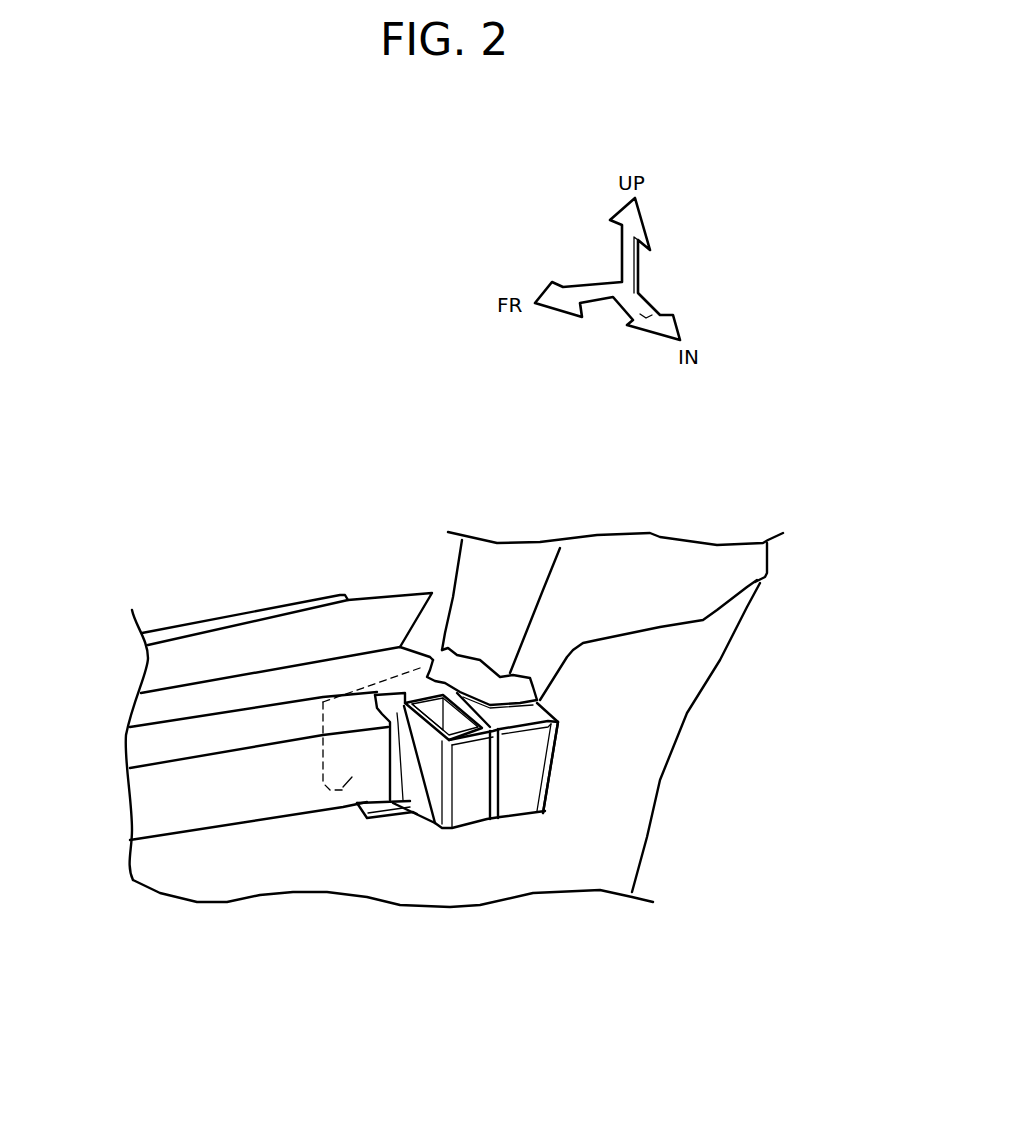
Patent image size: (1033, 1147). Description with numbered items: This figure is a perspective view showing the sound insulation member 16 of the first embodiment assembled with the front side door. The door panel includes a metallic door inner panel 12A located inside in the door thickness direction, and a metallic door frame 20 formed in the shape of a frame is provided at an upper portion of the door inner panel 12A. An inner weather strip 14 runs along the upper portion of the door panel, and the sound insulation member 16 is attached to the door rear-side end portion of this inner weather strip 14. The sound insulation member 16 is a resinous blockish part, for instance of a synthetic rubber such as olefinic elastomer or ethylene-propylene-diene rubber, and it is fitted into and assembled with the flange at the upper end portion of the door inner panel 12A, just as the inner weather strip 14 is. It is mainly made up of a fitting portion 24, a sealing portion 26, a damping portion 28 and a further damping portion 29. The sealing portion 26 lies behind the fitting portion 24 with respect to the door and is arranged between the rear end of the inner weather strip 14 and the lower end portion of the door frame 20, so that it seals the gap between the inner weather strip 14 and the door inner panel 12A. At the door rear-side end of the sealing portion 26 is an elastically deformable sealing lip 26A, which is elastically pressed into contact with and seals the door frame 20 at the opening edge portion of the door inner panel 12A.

The door inner panel 12A is at (656, 717).
The inner weather strip 14 is at (389, 713).
The sound insulation member 16 is at (532, 760).
The door frame 20 is at (612, 556).
The fitting portion 24 is at (371, 815).
The sealing portion 26 is at (566, 580).
The sealing lip 26A is at (495, 598).
The damping portion 28 is at (490, 885).
The damping portion 29 is at (550, 836).